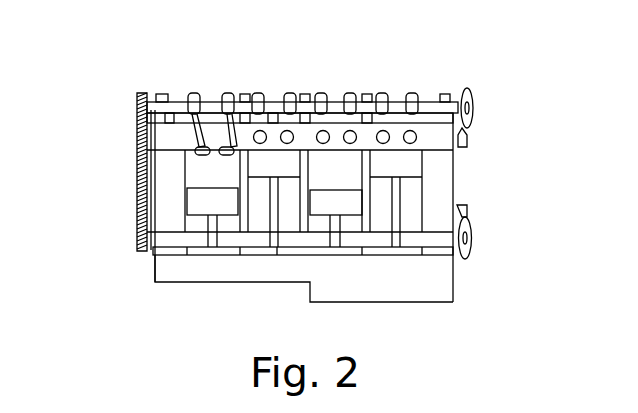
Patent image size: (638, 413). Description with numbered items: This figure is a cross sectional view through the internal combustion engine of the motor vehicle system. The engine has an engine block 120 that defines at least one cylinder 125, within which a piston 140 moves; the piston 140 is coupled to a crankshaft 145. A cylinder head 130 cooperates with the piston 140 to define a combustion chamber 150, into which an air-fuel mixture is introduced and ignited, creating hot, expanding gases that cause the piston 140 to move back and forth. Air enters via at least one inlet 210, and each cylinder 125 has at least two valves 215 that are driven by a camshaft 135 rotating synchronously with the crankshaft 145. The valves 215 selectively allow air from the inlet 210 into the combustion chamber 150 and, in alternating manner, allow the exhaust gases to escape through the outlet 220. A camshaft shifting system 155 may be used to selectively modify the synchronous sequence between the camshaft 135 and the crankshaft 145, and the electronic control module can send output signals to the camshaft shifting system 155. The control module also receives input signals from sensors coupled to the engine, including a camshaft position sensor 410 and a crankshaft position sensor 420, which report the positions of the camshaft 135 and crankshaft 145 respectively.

The engine block 120 is at (137, 191).
The cylinder 125 is at (375, 97).
The cylinder head 130 is at (150, 150).
The camshaft 135 is at (203, 95).
The piston 140 is at (305, 253).
The crankshaft 145 is at (155, 280).
The combustion chamber 150 is at (457, 168).
The camshaft shifting system 155 is at (137, 99).
The inlet 210 is at (333, 97).
The valves 215 is at (228, 149).
The outlet 220 is at (270, 97).
The camshaft position sensor 410 is at (465, 142).
The crankshaft position sensor 420 is at (465, 203).